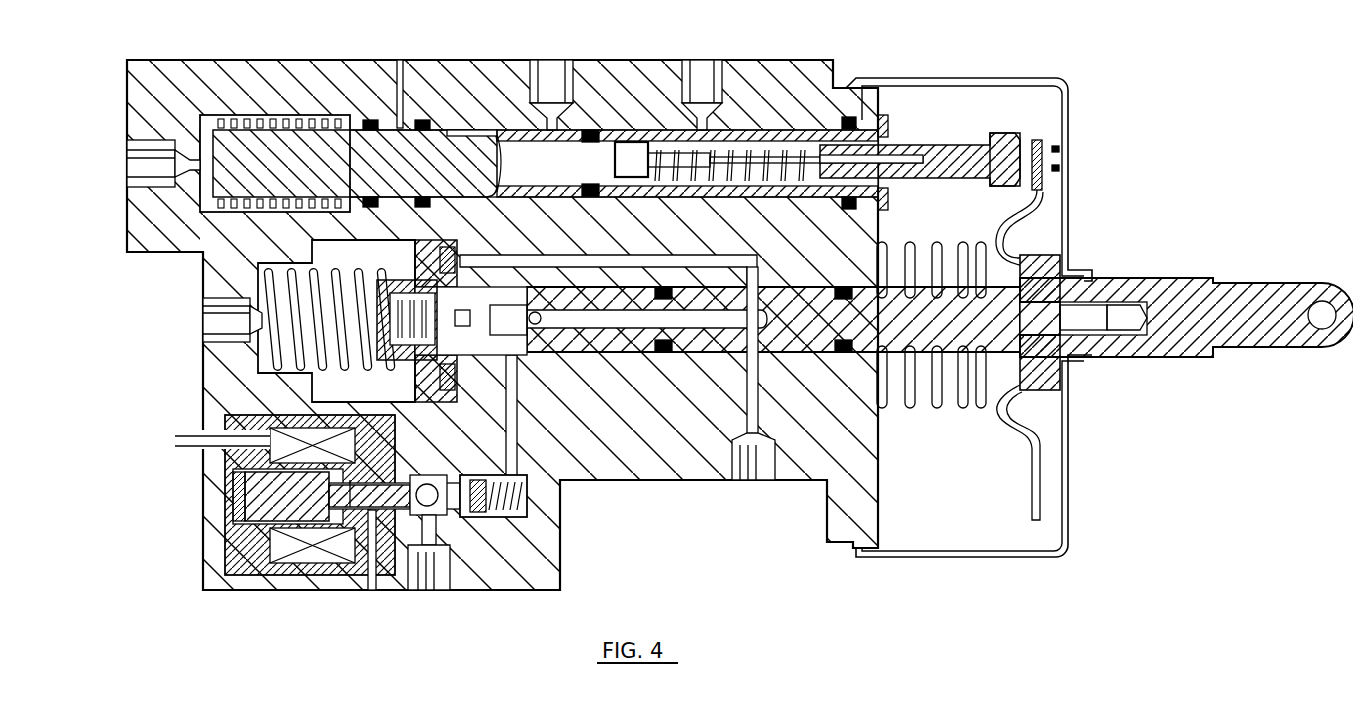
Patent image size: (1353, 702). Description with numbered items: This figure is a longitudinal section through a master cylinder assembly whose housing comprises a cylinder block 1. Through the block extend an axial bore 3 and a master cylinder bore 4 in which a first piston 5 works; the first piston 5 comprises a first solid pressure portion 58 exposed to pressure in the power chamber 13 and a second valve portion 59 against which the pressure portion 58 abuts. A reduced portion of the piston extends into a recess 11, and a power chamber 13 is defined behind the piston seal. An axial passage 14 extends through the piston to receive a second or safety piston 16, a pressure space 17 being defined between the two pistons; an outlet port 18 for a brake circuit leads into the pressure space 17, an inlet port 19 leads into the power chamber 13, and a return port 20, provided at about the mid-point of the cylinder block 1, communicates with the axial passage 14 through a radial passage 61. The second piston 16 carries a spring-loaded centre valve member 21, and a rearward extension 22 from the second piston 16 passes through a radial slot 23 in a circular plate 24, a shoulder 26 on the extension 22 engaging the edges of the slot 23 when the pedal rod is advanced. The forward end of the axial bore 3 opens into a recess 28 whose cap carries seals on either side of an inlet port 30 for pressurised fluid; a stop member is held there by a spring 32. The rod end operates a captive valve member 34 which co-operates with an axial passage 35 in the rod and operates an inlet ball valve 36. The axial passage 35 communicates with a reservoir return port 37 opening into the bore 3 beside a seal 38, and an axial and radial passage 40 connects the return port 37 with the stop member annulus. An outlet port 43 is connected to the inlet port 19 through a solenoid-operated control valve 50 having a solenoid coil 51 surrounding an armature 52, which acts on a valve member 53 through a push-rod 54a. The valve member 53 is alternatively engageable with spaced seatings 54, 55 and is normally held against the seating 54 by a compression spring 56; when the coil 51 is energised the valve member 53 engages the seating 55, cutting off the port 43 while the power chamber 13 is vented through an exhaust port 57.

The cylinder block 1 is at (683, 470).
The axial bore 3 is at (650, 350).
The master cylinder bore 4 is at (400, 100).
The first piston 5 is at (423, 125).
The recess 11 is at (467, 131).
The power chamber 13 is at (278, 108).
The axial passage 14 is at (612, 152).
The second piston 16 is at (920, 150).
The pressure space 17 is at (738, 160).
The outlet port 18 is at (703, 120).
The inlet port 19 is at (171, 148).
The return port 20 is at (552, 118).
The centre valve member 21 is at (635, 158).
The rearward extension 22 is at (1060, 160).
The radial slot 23 is at (1037, 146).
The circular plate 24 is at (1036, 198).
The shoulder 26 is at (1005, 148).
The recess 28 is at (376, 264).
The inlet port 30 is at (262, 320).
The spring 32 is at (338, 360).
The captive valve member 34 is at (522, 302).
The axial passage 35 is at (690, 330).
The inlet ball valve 36 is at (455, 321).
The reservoir return port 37 is at (752, 406).
The seal 38 is at (840, 353).
The axial and radial passage 40 is at (757, 262).
The outlet port 43 is at (517, 455).
The solenoid-operated control valve 50 is at (300, 545).
The solenoid coil 51 is at (228, 551).
The armature 52 is at (240, 497).
The valve member 53 is at (443, 525).
The seating 54 is at (420, 516).
The push-rod 54a is at (350, 510).
The seating 55 is at (482, 522).
The compression spring 56 is at (516, 522).
The exhaust port 57 is at (373, 585).
The pressure portion 58 is at (233, 148).
The valve portion 59 is at (578, 130).
The radial passage 61 is at (513, 140).